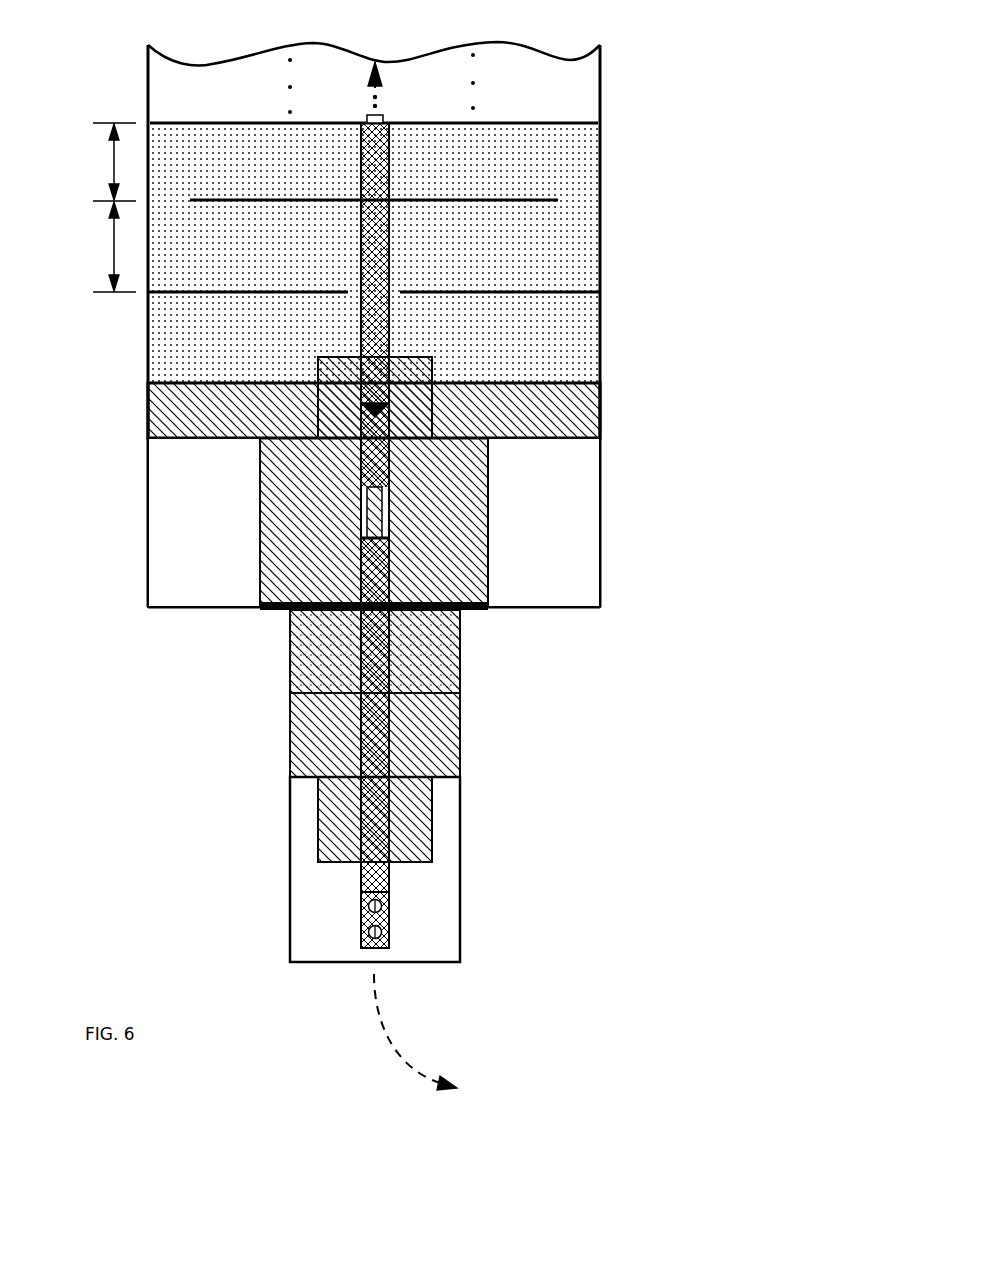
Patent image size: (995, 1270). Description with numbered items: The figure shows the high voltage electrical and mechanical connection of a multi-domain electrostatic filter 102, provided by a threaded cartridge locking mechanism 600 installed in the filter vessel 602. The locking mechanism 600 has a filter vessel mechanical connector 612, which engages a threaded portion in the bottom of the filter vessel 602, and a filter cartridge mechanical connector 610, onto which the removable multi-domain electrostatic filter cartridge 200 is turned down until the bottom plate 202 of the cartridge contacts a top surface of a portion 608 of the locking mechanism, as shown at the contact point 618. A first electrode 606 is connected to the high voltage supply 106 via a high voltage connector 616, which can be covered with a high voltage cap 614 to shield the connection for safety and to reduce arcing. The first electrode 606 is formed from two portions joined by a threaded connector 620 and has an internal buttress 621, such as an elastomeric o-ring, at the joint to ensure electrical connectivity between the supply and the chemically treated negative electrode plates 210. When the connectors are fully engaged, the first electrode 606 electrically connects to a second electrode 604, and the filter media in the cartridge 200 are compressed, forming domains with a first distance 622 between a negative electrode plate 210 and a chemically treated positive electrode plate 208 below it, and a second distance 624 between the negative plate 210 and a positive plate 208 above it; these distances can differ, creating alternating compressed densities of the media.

The multi-domain electrostatic filter 102 is at (146, 19).
The removable multi-domain electrostatic filter cartridge 200 is at (575, 185).
The chemically treated negative electrode plate 210 is at (558, 200).
The chemically treated positive electrode plate 208 is at (552, 295).
The second electrode 604 is at (390, 272).
The first electrode 606 is at (360, 733).
The filter vessel 602 is at (146, 528).
The threaded cartridge locking mechanism 600 is at (247, 558).
The filter cartridge mechanical connector 610 is at (432, 357).
The contact point 618 is at (244, 459).
The bottom plate 202 is at (552, 442).
The portion of the threaded cartridge locking mechanism 608 is at (488, 563).
The filter vessel mechanical connector 612 is at (460, 670).
The high voltage cap 614 is at (462, 883).
The high voltage connector 616 is at (388, 927).
The threaded connector 620 is at (383, 500).
The internal buttress 621 is at (386, 537).
The second distance 624 is at (98, 162).
The first distance 622 is at (98, 247).
The high voltage generator 106 is at (485, 1051).